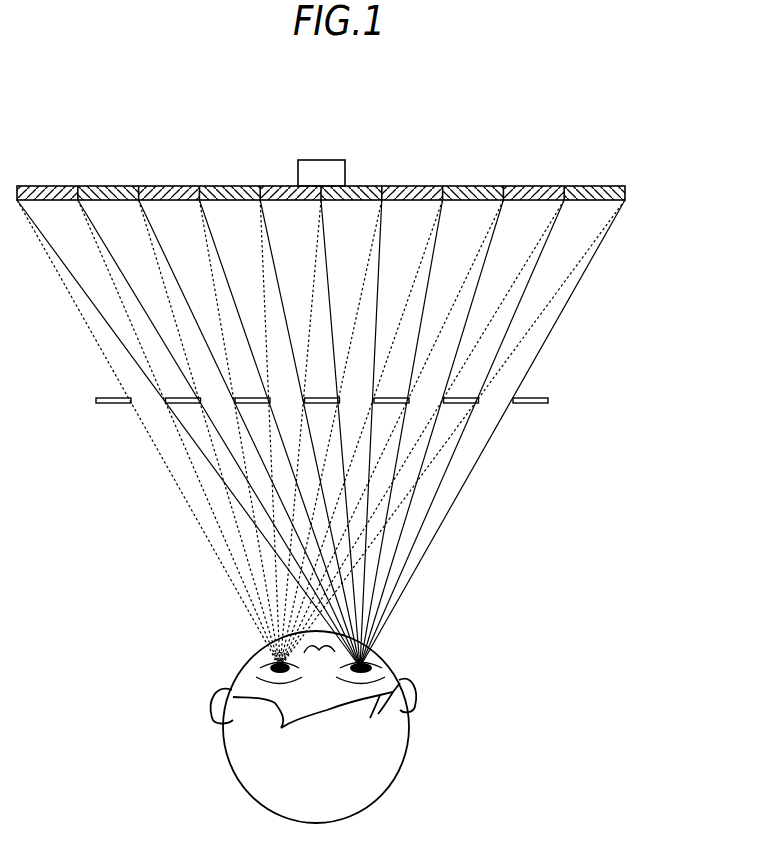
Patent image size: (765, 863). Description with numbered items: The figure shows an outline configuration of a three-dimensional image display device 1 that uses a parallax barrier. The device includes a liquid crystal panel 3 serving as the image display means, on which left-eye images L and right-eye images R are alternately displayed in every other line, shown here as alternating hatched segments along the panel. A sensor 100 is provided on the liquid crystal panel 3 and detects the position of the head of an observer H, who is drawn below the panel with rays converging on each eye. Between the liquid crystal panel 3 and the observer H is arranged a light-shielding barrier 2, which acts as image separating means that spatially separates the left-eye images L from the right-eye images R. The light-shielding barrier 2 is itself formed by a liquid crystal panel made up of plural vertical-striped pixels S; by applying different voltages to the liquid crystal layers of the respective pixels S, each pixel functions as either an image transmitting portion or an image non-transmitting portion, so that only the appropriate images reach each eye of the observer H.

The 3D image display device 1 is at (358, 134).
The liquid crystal panel 3 is at (358, 154).
The right-eye images R is at (47, 186).
The left-eye images L is at (118, 186).
The sensor 100 is at (313, 164).
The light-shielding barrier 2 is at (548, 400).
The vertical-striped pixels S is at (497, 403).
The observer H is at (412, 758).